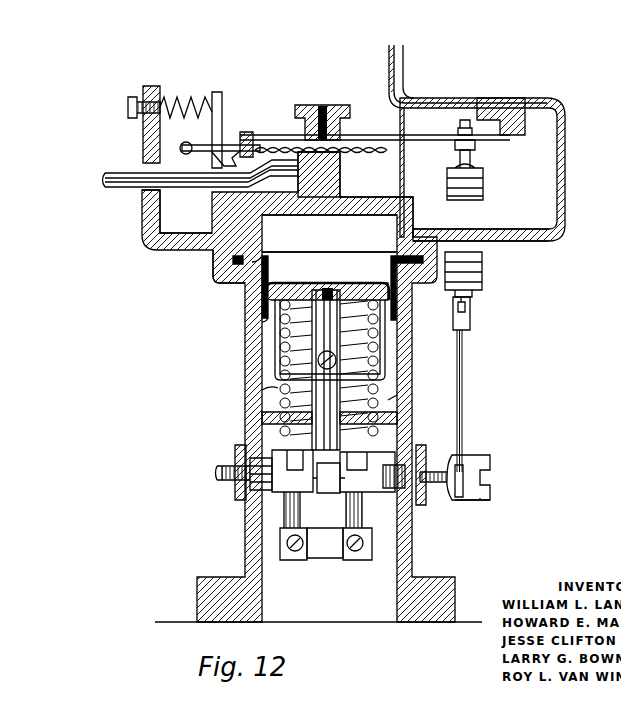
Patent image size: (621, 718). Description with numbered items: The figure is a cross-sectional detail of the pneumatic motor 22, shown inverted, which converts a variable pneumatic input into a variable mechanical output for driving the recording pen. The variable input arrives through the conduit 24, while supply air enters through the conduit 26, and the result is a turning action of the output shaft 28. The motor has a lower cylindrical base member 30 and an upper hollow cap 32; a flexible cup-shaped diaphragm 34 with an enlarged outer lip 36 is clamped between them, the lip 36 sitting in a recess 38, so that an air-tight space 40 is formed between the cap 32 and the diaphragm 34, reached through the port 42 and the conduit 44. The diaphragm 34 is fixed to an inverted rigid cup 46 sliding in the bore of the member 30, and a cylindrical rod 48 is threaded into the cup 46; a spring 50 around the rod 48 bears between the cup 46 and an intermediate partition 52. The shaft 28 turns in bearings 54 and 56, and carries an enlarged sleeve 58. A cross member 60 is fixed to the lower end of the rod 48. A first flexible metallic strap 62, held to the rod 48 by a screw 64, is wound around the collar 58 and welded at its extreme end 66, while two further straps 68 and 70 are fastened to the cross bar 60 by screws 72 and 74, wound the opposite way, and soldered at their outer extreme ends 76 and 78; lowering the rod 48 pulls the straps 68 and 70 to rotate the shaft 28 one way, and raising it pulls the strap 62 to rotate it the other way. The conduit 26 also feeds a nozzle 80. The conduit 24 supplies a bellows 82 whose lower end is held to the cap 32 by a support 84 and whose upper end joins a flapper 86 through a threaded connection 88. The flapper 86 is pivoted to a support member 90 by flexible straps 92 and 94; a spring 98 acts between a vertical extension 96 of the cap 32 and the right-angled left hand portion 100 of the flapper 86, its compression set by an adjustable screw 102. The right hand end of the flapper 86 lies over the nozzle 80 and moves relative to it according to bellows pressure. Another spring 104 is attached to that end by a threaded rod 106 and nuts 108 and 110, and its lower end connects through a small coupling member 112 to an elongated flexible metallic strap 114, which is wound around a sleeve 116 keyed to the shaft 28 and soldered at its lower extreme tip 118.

The pneumatic motor 22 is at (250, 350).
The conduit 24 is at (118, 184).
The conduit 26 is at (404, 62).
The output shaft 28 is at (217, 472).
The lower cylindrical base member 30 is at (248, 304).
The upper hollow cap 32 is at (377, 200).
The flexible cup-shaped diaphragm 34 is at (303, 283).
The enlarged outer lip 36 is at (216, 262).
The recess 38 is at (412, 265).
The air-tight space 40 is at (323, 247).
The port 42 is at (422, 232).
The conduit 44 is at (567, 193).
The inverted rigid cup 46 is at (275, 330).
The cylindrical rod 48 is at (312, 430).
The spring 50 is at (252, 383).
The intermediate partition 52 is at (400, 390).
The bearing 54 is at (236, 500).
The bearing 56 is at (426, 500).
The enlarged sleeve 58 is at (252, 492).
The cross member 60 is at (327, 548).
The first flexible metallic strap 62 is at (334, 450).
The screw 64 is at (328, 350).
The extreme end 66 is at (332, 468).
The flexible metallic strap 68 is at (283, 520).
The flexible metallic strap 70 is at (368, 516).
The screw 72 is at (295, 551).
The screw 74 is at (355, 551).
The outer extreme end 76 is at (292, 472).
The outer extreme end 78 is at (372, 462).
The nozzle 80 is at (508, 128).
The bellows 82 is at (378, 158).
The support 84 is at (300, 183).
The flapper 86 is at (360, 133).
The threaded connection 88 is at (310, 105).
The support member 90 is at (217, 190).
The flexible strap 92 is at (226, 140).
The flexible strap 94 is at (205, 148).
The vertical extension 96 is at (143, 133).
The spring 98 is at (207, 95).
The left hand portion 100 is at (223, 100).
The adjustable screw 102 is at (131, 96).
The spring 104 is at (483, 270).
The threaded rod 106 is at (460, 157).
The nut 108 is at (458, 131).
The nut 110 is at (475, 146).
The coupling member 112 is at (470, 313).
The elongated flexible metallic strap 114 is at (463, 374).
The sleeve 116 is at (470, 502).
The lower extreme tip 118 is at (466, 455).